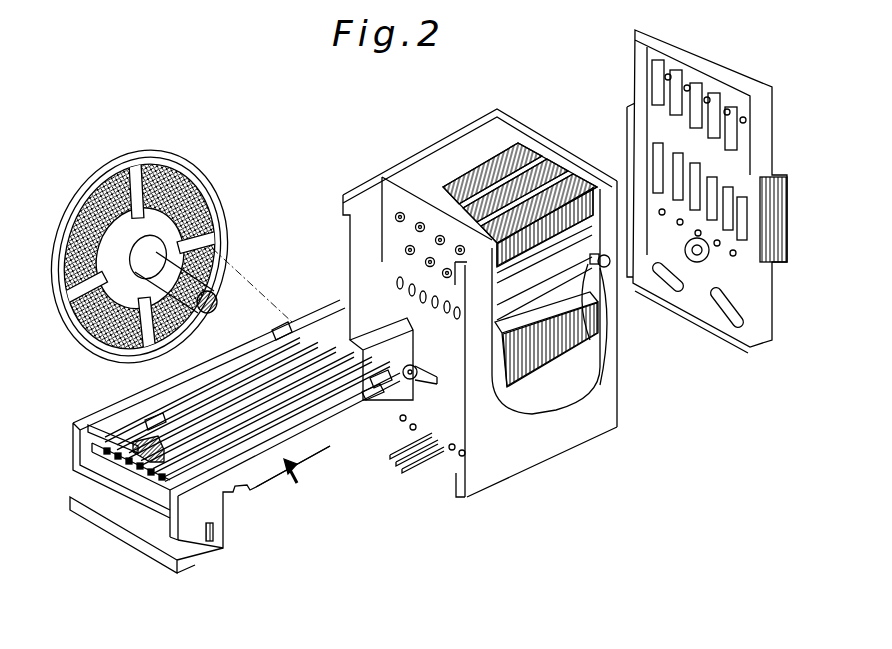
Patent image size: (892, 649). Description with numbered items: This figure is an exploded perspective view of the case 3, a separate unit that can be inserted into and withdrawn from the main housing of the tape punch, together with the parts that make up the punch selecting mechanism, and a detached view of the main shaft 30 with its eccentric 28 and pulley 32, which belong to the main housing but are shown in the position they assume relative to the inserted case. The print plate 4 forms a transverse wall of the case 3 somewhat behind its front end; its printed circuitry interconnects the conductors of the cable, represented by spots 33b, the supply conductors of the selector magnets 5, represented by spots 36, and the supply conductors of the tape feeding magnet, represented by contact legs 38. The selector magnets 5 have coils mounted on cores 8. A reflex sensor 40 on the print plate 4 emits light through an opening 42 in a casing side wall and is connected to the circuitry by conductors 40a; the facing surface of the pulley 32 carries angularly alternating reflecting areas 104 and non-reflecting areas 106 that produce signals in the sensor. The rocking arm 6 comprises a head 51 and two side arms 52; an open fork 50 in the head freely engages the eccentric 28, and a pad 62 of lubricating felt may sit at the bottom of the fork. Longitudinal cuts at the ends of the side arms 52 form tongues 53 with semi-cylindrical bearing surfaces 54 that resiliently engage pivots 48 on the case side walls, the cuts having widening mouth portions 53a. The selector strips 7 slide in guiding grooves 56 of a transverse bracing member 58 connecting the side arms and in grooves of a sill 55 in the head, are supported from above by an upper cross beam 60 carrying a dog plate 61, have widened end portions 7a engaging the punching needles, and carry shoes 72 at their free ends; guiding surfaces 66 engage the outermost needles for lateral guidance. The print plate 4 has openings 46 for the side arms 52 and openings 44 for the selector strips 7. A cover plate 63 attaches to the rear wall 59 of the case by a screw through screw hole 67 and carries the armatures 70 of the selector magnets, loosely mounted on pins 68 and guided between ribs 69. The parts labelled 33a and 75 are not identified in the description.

The case 3 is at (557, 440).
The print plate 4 is at (395, 222).
The selector magnets 5 is at (493, 168).
The rocking arm 6 is at (296, 478).
The selector strips 7 is at (216, 386).
The widened end portions 7a is at (140, 492).
The cores 8 is at (545, 354).
The eccentric 28 is at (213, 288).
The main shaft 30 is at (130, 250).
The pulley 32 is at (216, 196).
The contact pins 33a is at (665, 300).
The spots 33b is at (402, 422).
The spots 36 is at (400, 213).
The contact legs 38 is at (408, 466).
The reflex sensor 40 is at (368, 252).
The conductors 40a is at (460, 495).
The opening 42 is at (350, 300).
The openings 44 is at (420, 223).
The openings 46 is at (385, 232).
The pivots 48 is at (605, 310).
The open fork 50 is at (195, 563).
The head 51 is at (197, 507).
The side arms 52 is at (290, 433).
The tongues 53 is at (284, 325).
The widening mouth portions 53a is at (320, 330).
The bearing surfaces 54 is at (278, 322).
The sill 55 is at (113, 487).
The guiding grooves 56 is at (150, 418).
The transverse bracing member 58 is at (245, 487).
The rear wall 59 is at (540, 137).
The upper cross beam 60 is at (132, 440).
The dog plate 61 is at (107, 430).
The pad 62 is at (210, 543).
The cover plate 63 is at (719, 73).
The guiding surfaces 66 is at (78, 438).
The screw hole 67 is at (667, 275).
The pins 68 is at (663, 70).
The ribs 69 is at (677, 122).
The armatures 70 is at (665, 102).
The shoes 72 is at (338, 342).
The rail 75 is at (262, 460).
The reflecting areas 104 is at (137, 190).
The non-reflecting areas 106 is at (178, 190).